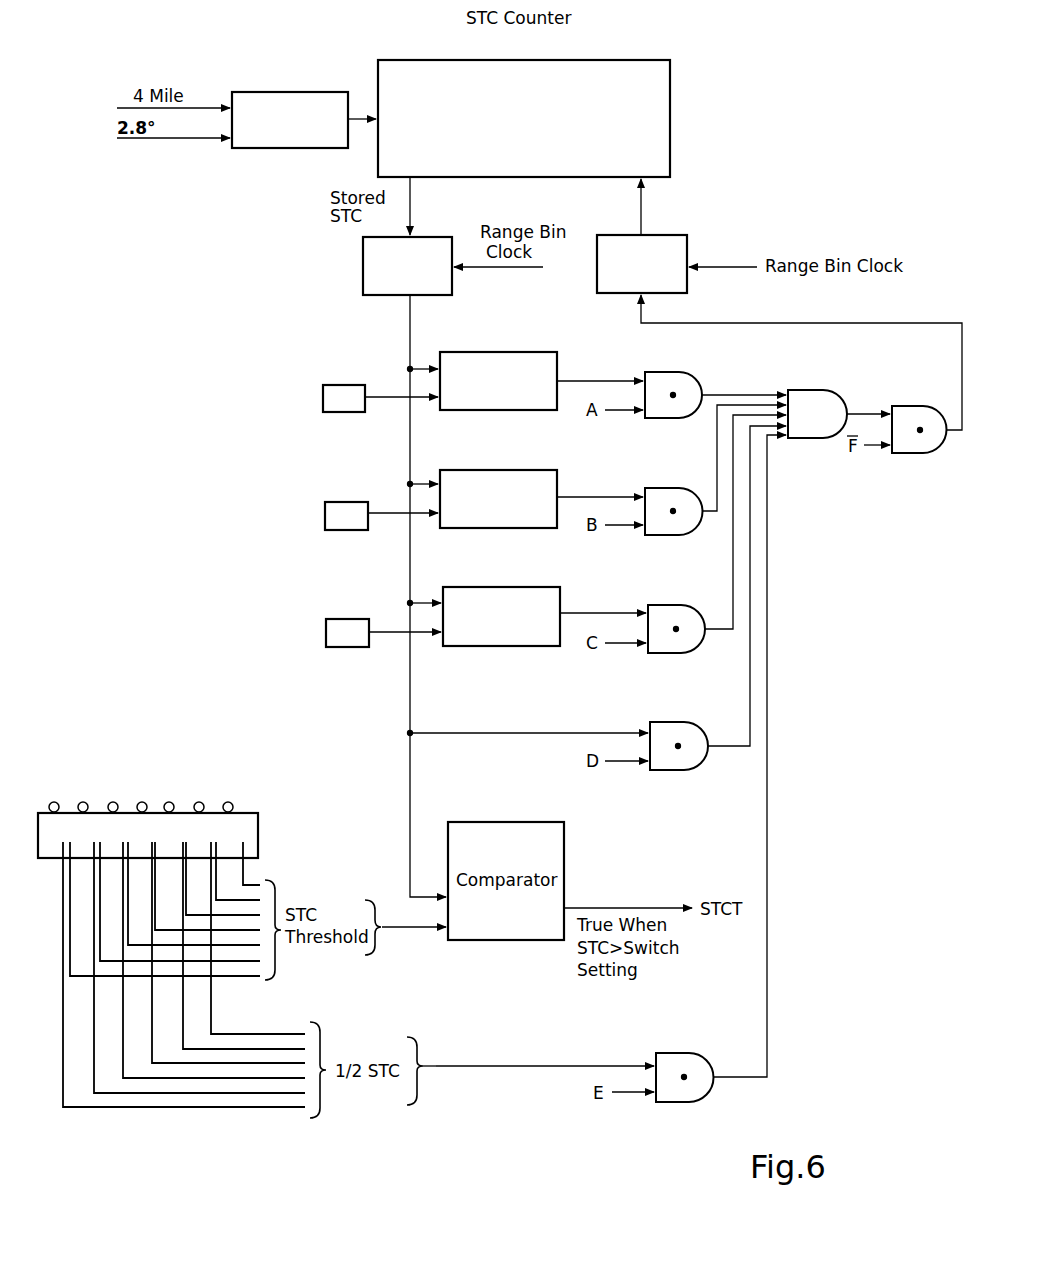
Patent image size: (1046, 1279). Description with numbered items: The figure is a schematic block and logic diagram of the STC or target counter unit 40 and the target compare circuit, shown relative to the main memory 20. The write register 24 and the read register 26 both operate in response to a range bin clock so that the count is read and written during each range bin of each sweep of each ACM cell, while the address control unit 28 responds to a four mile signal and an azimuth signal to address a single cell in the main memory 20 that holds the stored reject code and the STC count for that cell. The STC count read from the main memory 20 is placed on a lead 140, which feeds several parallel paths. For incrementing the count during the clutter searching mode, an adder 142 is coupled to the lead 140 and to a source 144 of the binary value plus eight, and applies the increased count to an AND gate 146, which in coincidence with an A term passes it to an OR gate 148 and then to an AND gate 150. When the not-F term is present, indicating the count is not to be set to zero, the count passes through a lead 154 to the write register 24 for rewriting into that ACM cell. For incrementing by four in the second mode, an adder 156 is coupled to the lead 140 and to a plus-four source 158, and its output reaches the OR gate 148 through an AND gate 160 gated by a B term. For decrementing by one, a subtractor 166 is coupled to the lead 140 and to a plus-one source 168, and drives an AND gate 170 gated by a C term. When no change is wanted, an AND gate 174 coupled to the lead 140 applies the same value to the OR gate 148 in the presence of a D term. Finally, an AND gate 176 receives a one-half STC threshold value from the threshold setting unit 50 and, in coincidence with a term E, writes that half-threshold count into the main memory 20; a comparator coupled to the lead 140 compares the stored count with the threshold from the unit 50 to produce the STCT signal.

The main memory 20 is at (670, 134).
The write register 24 is at (652, 235).
The read register 26 is at (420, 237).
The address control unit 28 is at (292, 94).
The STC or target counter unit 40 is at (611, 343).
The threshold setting unit 50 is at (252, 813).
The lead 140 is at (410, 333).
The adder 142 is at (492, 352).
The source of +8 value 144 is at (340, 385).
The AND gate 146 is at (668, 372).
The OR gate 148 is at (810, 390).
The AND gate 150 is at (926, 406).
The lead 154 is at (790, 323).
The adder 156 is at (500, 470).
The source of +4 value 158 is at (345, 502).
The AND gate 160 is at (668, 488).
The subtractor 166 is at (502, 587).
The +1 value source 168 is at (345, 619).
The AND gate 170 is at (670, 605).
The AND gate 174 is at (672, 722).
The AND gate 176 is at (676, 1053).